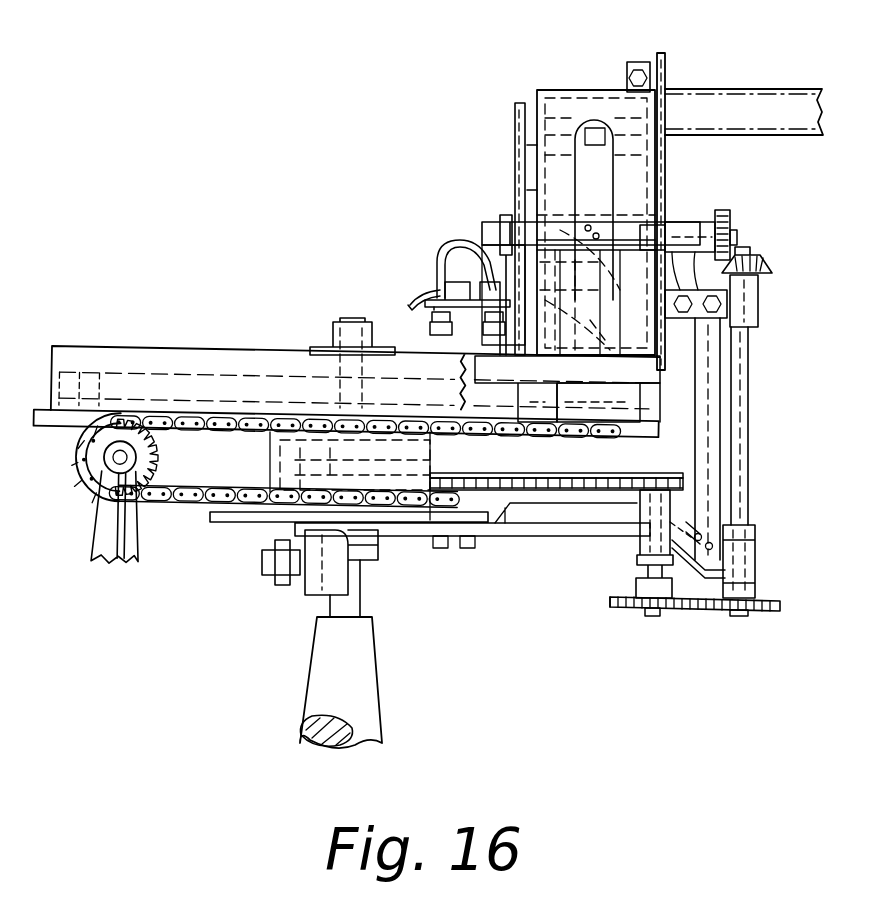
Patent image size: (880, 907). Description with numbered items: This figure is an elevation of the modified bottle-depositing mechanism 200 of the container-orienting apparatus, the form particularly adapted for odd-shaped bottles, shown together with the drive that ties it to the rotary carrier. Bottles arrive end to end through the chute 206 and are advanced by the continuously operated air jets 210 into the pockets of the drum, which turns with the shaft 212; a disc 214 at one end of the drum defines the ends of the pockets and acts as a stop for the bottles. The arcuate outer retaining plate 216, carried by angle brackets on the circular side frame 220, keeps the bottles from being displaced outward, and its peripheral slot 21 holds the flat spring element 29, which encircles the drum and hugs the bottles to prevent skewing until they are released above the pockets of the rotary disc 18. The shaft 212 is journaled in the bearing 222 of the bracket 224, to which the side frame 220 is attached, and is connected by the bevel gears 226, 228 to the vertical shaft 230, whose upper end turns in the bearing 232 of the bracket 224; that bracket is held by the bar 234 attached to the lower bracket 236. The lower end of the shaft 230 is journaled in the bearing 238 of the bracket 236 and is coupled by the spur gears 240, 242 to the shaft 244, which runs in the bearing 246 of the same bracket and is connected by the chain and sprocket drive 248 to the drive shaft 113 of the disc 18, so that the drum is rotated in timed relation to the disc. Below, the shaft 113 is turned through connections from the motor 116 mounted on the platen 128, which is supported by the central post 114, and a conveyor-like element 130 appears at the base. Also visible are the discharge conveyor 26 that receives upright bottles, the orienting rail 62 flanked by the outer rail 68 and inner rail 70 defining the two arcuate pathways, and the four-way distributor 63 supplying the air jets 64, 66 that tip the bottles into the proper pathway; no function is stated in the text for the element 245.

The rotary disc 18 is at (66, 430).
The peripheral slot 21 is at (580, 167).
The discharge conveyor 26 is at (186, 512).
The flat spring element 29 is at (585, 300).
The orienting rail 62 is at (562, 402).
The four-way distributor 63 is at (470, 282).
The jet 64 is at (488, 332).
The jet 66 is at (430, 327).
The outer rail 68 is at (56, 360).
The inner rail 70 is at (517, 395).
The shaft 113 is at (380, 461).
The central post 114 is at (358, 600).
The motor 116 is at (310, 585).
The platen 128 is at (252, 516).
The cone 130 is at (315, 672).
The bottle depositing mechanism 200 is at (531, 86).
The chute 206 is at (762, 110).
The air jets 210 is at (634, 60).
The shaft 212 is at (739, 238).
The disc 214 is at (516, 144).
The arcuate outer retaining plate 216 is at (588, 92).
The circular side frame 220 is at (668, 80).
The bearing 222 is at (700, 222).
The bracket 224 is at (690, 320).
The bevel gear 226 is at (732, 220).
The bevel gear 228 is at (770, 262).
The vertical shaft 230 is at (744, 438).
The bearing 232 is at (760, 302).
The bar 234 is at (722, 388).
The lower bracket 236 is at (702, 582).
The bearing 238 is at (757, 555).
The spur gear 240 is at (762, 614).
The spur gear 242 is at (616, 612).
The shaft 244 is at (652, 618).
The toothed rack 245 is at (558, 474).
The bearing 246 is at (640, 548).
The chain and sprocket drive 248 is at (462, 473).